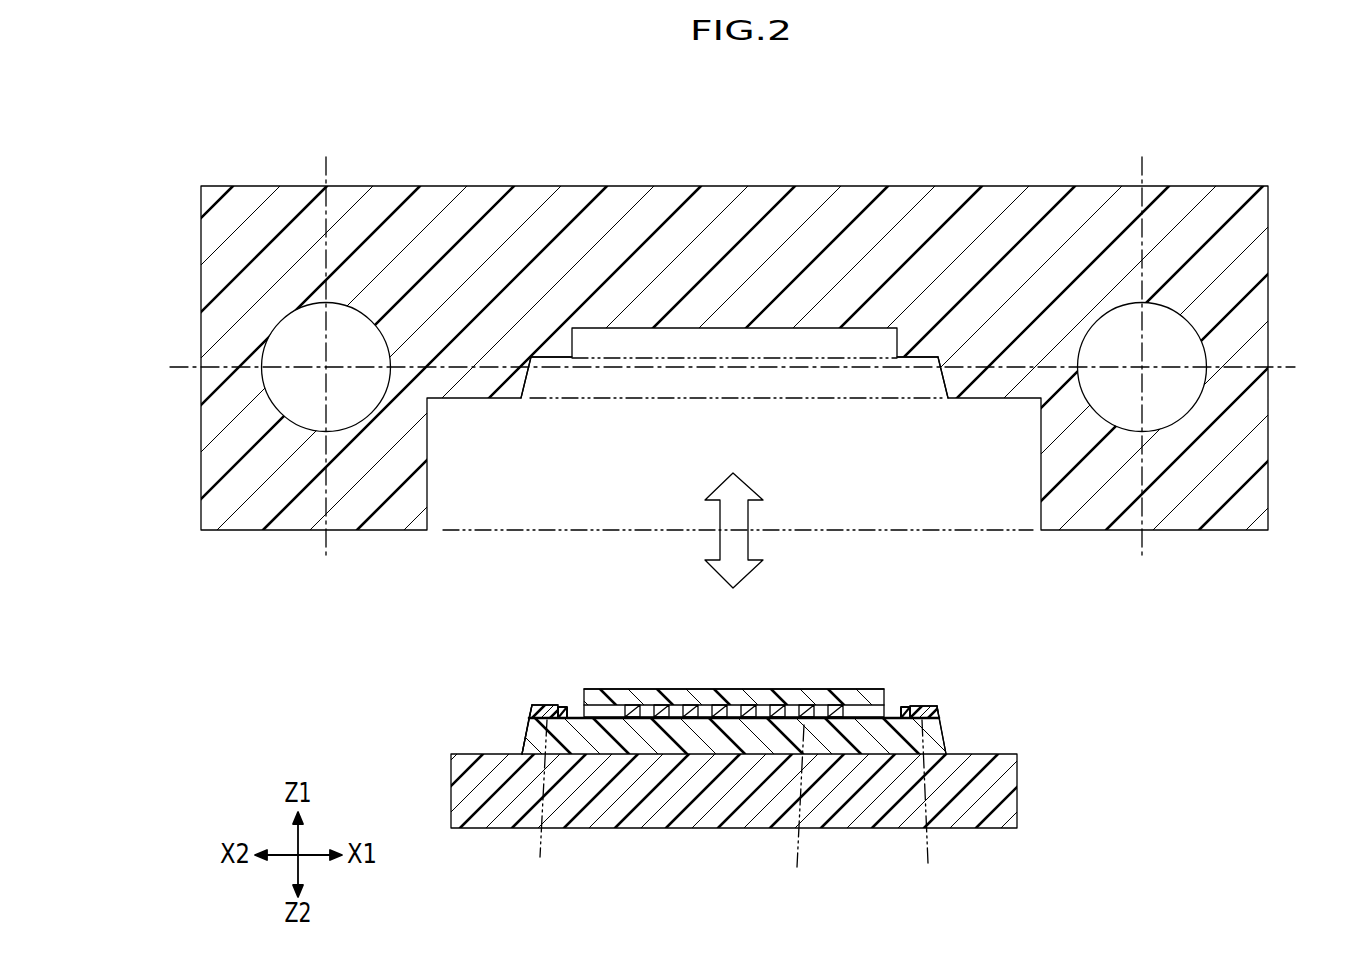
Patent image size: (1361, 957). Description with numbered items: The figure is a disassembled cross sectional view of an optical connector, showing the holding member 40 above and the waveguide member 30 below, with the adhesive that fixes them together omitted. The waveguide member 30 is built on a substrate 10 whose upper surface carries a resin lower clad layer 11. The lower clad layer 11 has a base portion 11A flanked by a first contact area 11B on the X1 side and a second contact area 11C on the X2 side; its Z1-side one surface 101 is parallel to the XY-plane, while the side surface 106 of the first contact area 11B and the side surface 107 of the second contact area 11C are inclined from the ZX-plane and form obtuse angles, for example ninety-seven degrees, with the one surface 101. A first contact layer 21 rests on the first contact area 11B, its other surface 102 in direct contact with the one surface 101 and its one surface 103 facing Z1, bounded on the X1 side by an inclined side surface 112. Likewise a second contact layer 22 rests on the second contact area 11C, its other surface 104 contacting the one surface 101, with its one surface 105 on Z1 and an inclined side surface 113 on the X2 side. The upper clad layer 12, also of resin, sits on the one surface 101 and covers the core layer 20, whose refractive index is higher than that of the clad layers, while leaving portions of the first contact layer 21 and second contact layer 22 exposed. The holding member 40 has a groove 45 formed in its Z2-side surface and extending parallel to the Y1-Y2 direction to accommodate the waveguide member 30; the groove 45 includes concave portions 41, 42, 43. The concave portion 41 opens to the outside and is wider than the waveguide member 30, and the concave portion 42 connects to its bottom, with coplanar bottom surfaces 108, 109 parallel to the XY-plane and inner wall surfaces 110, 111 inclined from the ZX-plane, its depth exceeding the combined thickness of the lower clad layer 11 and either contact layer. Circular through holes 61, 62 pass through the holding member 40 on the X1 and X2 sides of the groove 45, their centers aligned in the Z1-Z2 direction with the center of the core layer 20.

The substrate 10 is at (987, 792).
The lower clad layer 11 is at (730, 743).
The base portion 11A is at (800, 812).
The first contact area 11B is at (927, 801).
The second contact area 11C is at (540, 801).
The upper clad layer 12 is at (702, 704).
The core layer 20 is at (658, 706).
The first contact layer 21 is at (906, 706).
The second contact layer 22 is at (563, 706).
The waveguide member 30 is at (800, 681).
The holding member 40 is at (1250, 262).
The concave portion 41 is at (649, 427).
The concave portion 42 is at (690, 380).
The concave portion 43 is at (800, 342).
The groove 45 is at (787, 112).
The through hole 61 is at (1182, 352).
The through hole 62 is at (285, 350).
The one surface 101 is at (614, 712).
The other surface 102 is at (913, 718).
The one surface 103 is at (920, 707).
The other surface 104 is at (538, 722).
The one surface 105 is at (548, 706).
The side surface 106 is at (946, 740).
The side surface 107 is at (525, 740).
The bottom surface 108 is at (913, 358).
The bottom surface 109 is at (555, 358).
The inner wall surface 110 is at (943, 378).
The inner wall surface 111 is at (526, 376).
The side surface 112 is at (935, 711).
The side surface 113 is at (538, 717).